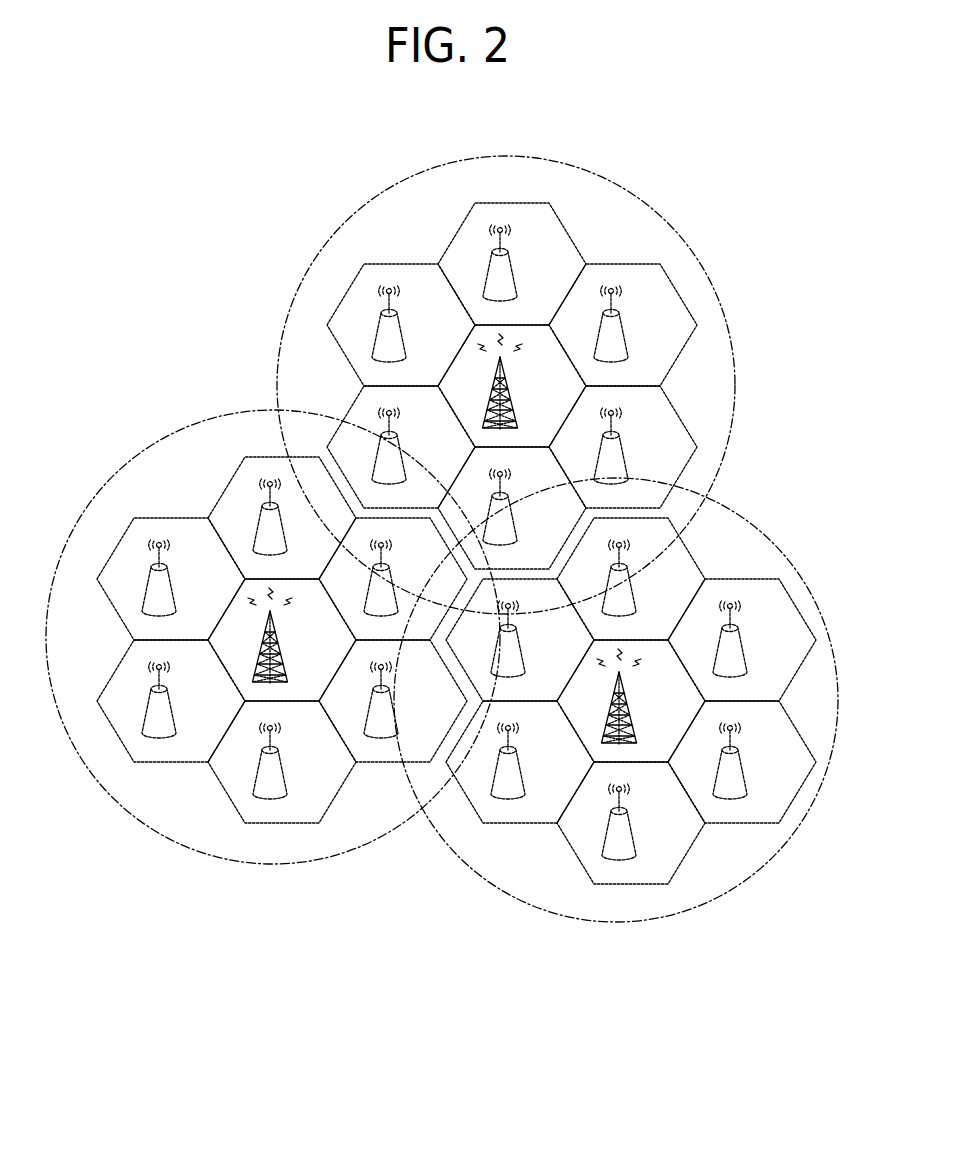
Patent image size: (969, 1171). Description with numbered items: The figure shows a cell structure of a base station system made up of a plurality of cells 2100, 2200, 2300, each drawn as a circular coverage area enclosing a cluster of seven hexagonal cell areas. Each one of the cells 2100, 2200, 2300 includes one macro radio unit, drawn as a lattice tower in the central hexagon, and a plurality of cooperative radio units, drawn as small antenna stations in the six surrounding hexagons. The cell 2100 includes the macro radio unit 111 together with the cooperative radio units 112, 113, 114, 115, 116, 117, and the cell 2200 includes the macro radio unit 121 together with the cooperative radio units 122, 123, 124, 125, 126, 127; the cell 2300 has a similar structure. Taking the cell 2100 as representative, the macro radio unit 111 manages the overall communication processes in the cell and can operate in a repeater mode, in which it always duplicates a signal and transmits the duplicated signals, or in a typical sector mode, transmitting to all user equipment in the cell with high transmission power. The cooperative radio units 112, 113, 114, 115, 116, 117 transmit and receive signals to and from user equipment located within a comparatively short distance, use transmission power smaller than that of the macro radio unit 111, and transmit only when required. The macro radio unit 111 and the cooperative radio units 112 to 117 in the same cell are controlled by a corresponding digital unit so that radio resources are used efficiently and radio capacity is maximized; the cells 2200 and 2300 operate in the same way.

The macro radio unit 111 is at (282, 644).
The cooperative radio unit 112 is at (170, 703).
The cooperative radio unit 113 is at (281, 764).
The cooperative radio unit 114 is at (392, 703).
The cooperative radio unit 115 is at (392, 581).
The cooperative radio unit 116 is at (281, 520).
The cooperative radio unit 117 is at (170, 581).
The macro radio unit 121 is at (512, 390).
The cooperative radio unit 122 is at (400, 449).
The cooperative radio unit 123 is at (511, 510).
The cooperative radio unit 124 is at (622, 449).
The cooperative radio unit 125 is at (622, 327).
The cooperative radio unit 126 is at (511, 266).
The cooperative radio unit 127 is at (400, 327).
The cell 2100 is at (237, 413).
The cell 2200 is at (632, 195).
The cell 2300 is at (509, 912).